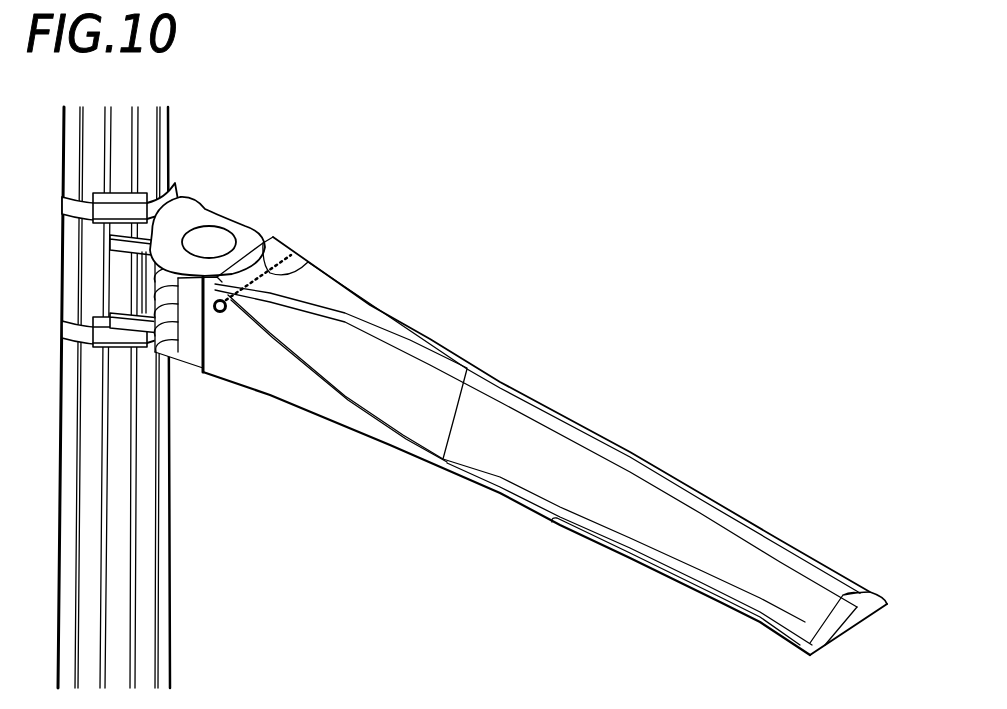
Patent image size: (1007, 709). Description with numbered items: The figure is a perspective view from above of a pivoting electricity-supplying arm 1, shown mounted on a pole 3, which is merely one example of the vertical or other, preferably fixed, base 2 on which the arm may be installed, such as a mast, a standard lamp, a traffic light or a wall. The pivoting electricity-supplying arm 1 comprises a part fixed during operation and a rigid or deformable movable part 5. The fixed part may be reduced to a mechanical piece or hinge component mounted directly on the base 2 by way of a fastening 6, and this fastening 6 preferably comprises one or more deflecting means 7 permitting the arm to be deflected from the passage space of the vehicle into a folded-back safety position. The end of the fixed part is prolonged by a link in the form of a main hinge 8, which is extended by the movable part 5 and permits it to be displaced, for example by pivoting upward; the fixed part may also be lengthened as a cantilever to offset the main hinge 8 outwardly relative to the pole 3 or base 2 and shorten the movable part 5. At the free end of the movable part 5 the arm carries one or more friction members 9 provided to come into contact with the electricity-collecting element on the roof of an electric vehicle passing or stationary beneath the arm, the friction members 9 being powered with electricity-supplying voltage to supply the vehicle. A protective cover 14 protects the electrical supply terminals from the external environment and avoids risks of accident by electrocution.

The pivoting electricity-supplying arm 1 is at (472, 397).
The base 2 is at (177, 397).
The pole 3 is at (192, 629).
The movable part 5 is at (545, 442).
The fastening 6 is at (220, 242).
The deflecting means 7 is at (208, 242).
The main hinge 8 is at (268, 279).
The friction member 9 is at (750, 623).
The protective cover 14 is at (503, 457).